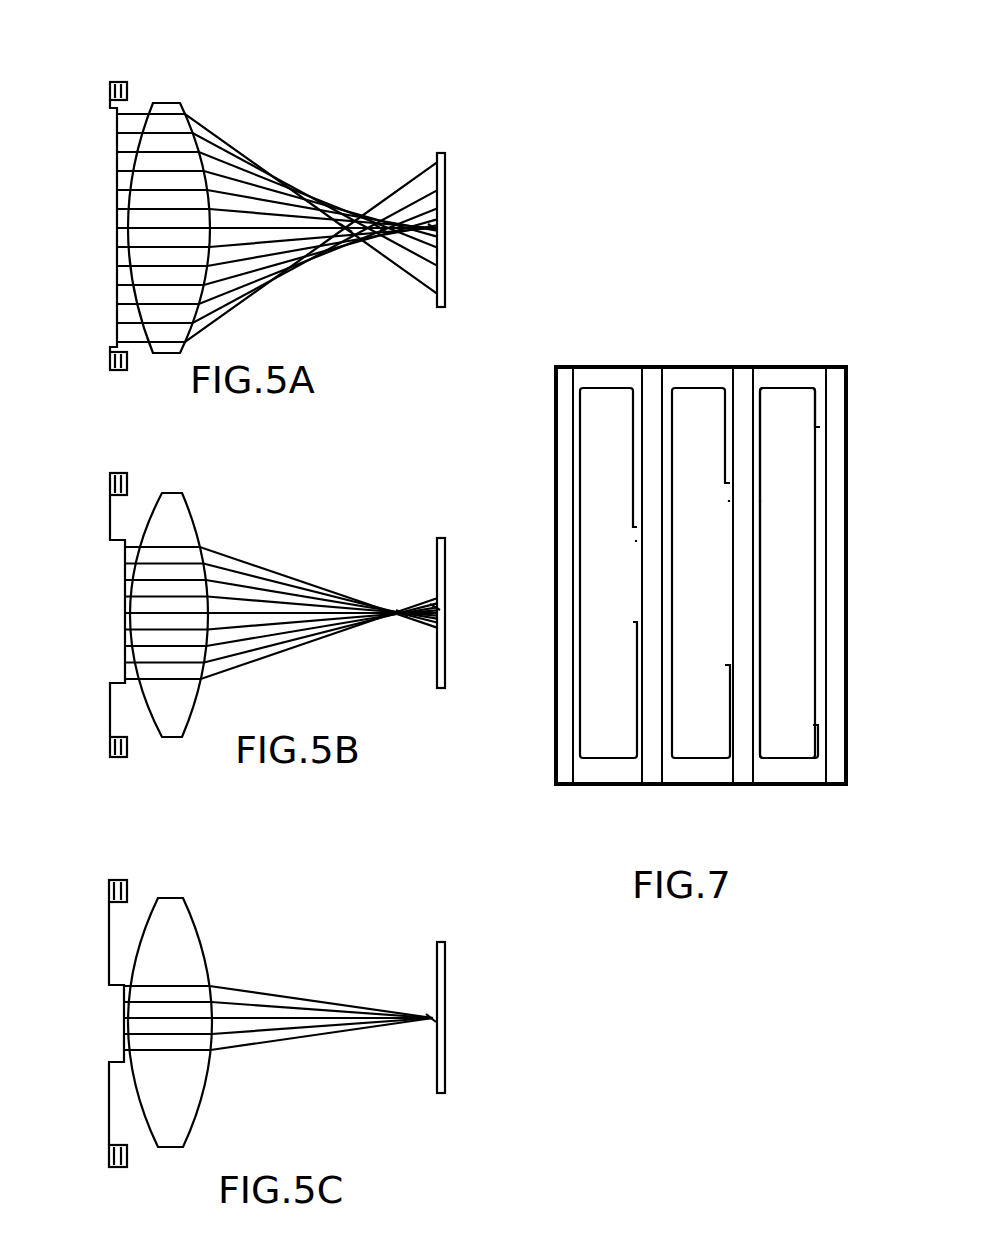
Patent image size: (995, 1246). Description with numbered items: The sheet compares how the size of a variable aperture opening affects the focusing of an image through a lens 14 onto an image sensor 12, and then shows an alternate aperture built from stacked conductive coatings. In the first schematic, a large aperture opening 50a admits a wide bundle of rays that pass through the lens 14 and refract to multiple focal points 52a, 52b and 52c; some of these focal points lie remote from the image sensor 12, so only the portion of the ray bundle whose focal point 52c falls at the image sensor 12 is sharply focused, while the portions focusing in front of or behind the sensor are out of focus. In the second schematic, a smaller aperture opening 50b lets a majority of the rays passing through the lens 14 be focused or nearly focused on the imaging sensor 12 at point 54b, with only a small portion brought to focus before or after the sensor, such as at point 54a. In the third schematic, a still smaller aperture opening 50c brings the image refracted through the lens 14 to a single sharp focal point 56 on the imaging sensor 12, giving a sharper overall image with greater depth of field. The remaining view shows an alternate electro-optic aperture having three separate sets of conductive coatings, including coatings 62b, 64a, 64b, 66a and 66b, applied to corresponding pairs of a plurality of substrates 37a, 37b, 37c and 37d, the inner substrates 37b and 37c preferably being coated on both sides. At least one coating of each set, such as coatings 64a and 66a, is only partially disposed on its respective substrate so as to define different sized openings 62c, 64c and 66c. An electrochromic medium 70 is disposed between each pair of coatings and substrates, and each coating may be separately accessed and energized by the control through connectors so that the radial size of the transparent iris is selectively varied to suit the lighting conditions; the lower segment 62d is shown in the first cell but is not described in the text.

In FIG. 5A, the image sensor 12 is at (440, 153).
In FIG. 5B, the image sensor 12 is at (438, 537).
In FIG. 5C, the image sensor 12 is at (434, 942).
In FIG. 5A, the lens 14 is at (165, 102).
In FIG. 5B, the lens 14 is at (188, 498).
In FIG. 5C, the lens 14 is at (190, 908).
In FIG. 5A, the large aperture opening 50a is at (117, 160).
In FIG. 5B, the smaller aperture opening 50b is at (125, 558).
In FIG. 5C, the still smaller aperture opening 50c is at (122, 997).
In FIG. 5A, the focal point 52a is at (331, 212).
In FIG. 5A, the focal point 52b is at (380, 230).
In FIG. 5A, the focal point 52c is at (432, 226).
In FIG. 5B, the focal point 54a is at (403, 612).
In FIG. 5B, the focal point 54b is at (443, 607).
In FIG. 5C, the sharp focal point 56 is at (432, 1016).
In FIG. 7, the electrochromic medium 70 is at (690, 427).
In FIG. 7, the substrate 37a is at (561, 423).
In FIG. 7, the inner substrate 37b is at (653, 598).
In FIG. 7, the inner substrate 37c is at (743, 620).
In FIG. 7, the substrate 37d is at (840, 785).
In FIG. 7, the conductive coating 62b is at (583, 497).
In FIG. 7, the opening 62c is at (640, 575).
In FIG. 7, the electrode segment 62d is at (633, 676).
In FIG. 7, the conductive coating 64a is at (722, 455).
In FIG. 7, the conductive coating 64b is at (673, 715).
In FIG. 7, the opening 64c is at (733, 572).
In FIG. 7, the conductive coating 66a is at (817, 418).
In FIG. 7, the conductive coating 66b is at (788, 527).
In FIG. 7, the opening 66c is at (817, 575).